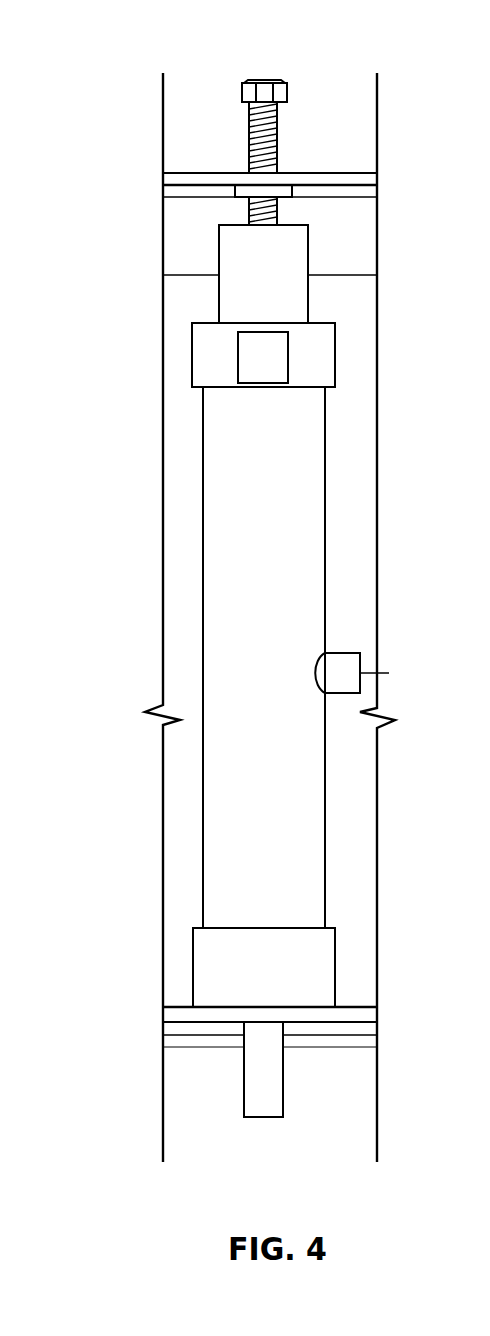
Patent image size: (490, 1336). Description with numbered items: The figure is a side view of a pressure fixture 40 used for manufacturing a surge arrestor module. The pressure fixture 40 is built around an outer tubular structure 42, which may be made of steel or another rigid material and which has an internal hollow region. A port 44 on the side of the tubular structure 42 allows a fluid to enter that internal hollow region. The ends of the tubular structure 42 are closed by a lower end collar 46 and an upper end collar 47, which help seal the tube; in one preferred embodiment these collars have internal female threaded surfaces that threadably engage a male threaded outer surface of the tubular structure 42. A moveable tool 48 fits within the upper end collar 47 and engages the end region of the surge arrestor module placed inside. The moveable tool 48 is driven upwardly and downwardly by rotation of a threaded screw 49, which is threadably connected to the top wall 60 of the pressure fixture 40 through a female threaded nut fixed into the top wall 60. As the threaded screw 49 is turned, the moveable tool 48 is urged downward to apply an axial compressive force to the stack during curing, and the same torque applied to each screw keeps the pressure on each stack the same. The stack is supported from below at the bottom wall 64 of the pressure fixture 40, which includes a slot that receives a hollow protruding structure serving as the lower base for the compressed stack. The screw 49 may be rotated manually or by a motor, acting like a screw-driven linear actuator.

The pressure fixture 40 is at (115, 635).
The outer tubular structure 42 is at (222, 875).
The port 44 is at (360, 660).
The lower end collar 46 is at (207, 965).
The upper end collar 47 is at (208, 355).
The moveable tool 48 is at (228, 252).
The threaded screw 49 is at (263, 88).
The top wall 60 is at (369, 181).
The bottom wall 64 is at (368, 1017).